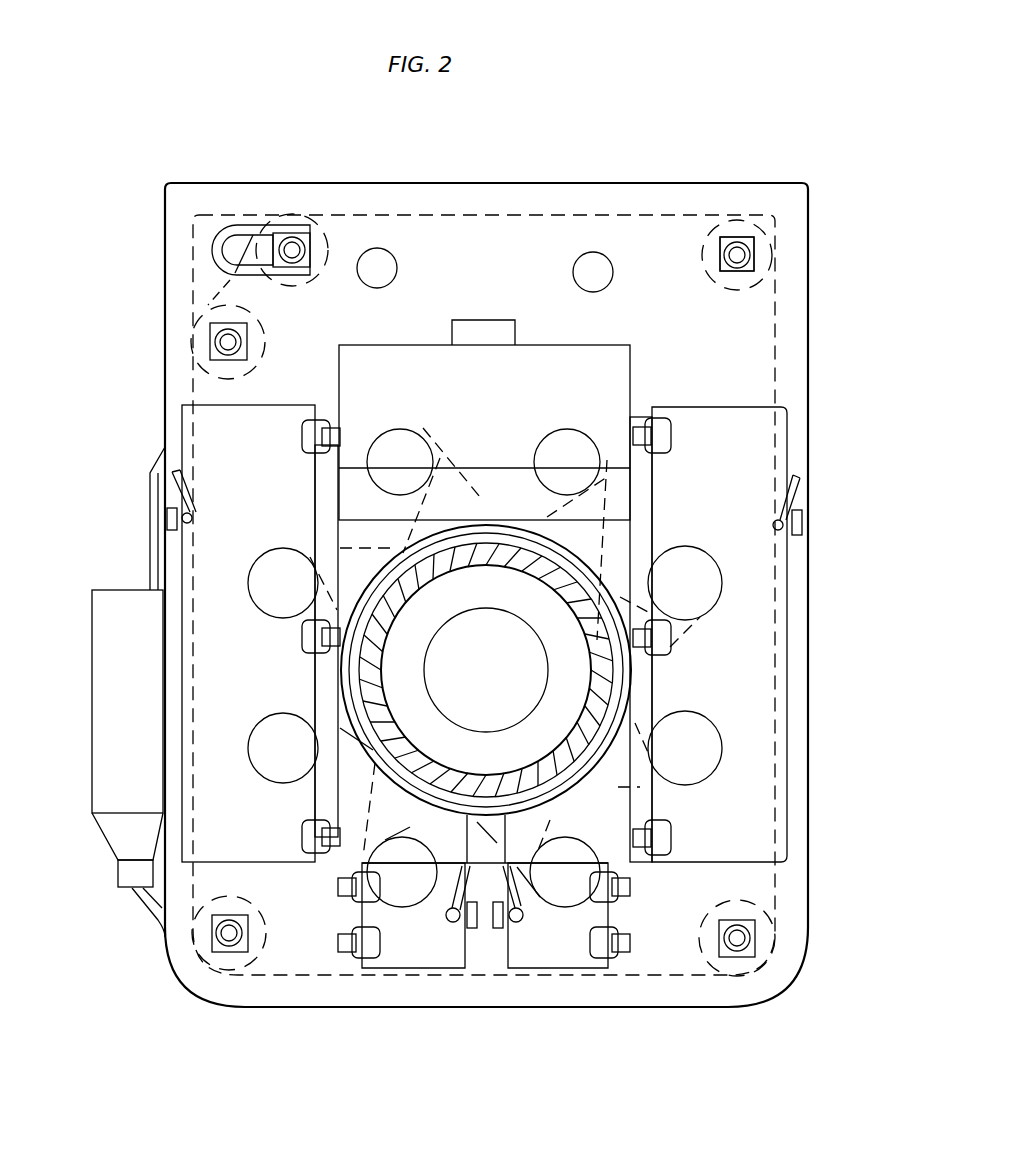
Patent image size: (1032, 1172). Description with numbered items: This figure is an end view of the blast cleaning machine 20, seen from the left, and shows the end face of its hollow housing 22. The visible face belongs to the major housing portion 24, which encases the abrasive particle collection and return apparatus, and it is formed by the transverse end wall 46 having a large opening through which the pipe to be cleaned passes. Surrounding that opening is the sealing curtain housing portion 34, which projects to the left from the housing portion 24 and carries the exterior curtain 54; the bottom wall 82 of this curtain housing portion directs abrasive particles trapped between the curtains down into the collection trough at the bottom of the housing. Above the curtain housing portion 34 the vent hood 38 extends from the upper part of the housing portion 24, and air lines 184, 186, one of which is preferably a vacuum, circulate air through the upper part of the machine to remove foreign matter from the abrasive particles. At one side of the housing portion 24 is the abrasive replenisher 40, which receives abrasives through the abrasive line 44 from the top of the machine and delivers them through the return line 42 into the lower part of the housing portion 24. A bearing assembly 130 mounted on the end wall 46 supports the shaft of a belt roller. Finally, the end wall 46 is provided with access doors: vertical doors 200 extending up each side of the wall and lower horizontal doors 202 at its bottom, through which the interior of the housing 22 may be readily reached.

The cleaning machine 20 is at (817, 587).
The hollow housing 22 is at (697, 1018).
The major housing portion 24 is at (797, 357).
The sealing curtain housing portion 34 is at (597, 770).
The vent hood 38 is at (633, 372).
The abrasive replenisher 40 is at (105, 590).
The return line 42 is at (152, 913).
The abrasive line 44 is at (150, 478).
The transverse end wall 46 is at (165, 348).
The exterior curtain 54 is at (468, 524).
The bottom wall 82 is at (463, 833).
The bearing assembly 130 is at (760, 257).
The air line 184 is at (398, 262).
The air line 186 is at (510, 303).
The vertical doors 200 is at (235, 405).
The lower horizontal doors 202 is at (420, 957).